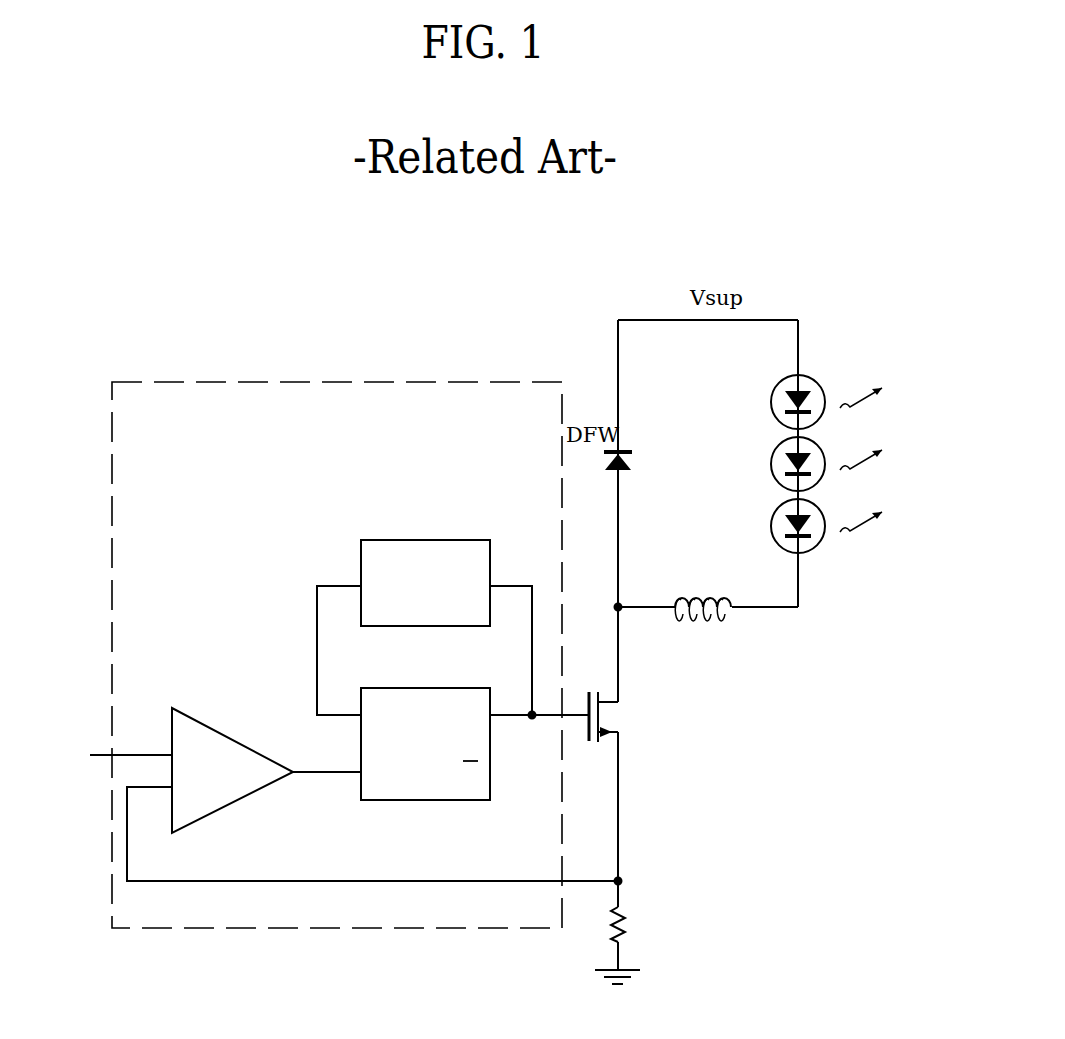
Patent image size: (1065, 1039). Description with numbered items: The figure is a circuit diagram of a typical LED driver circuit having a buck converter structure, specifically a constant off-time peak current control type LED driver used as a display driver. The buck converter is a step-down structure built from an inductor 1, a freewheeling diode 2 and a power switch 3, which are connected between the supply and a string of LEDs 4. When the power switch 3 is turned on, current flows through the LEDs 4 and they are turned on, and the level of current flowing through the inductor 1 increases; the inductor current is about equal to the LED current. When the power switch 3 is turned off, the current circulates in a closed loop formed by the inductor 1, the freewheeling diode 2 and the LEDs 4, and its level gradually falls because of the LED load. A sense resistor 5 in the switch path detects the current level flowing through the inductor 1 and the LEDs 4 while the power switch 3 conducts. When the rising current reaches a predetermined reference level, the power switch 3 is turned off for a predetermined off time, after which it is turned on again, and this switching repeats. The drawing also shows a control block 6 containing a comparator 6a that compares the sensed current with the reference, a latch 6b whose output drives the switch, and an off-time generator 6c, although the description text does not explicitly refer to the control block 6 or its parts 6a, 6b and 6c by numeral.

The inductor L 1 is at (732, 618).
The freewheeling diode DFW 2 is at (618, 320).
The power switch MSW 3 is at (623, 725).
The LEDs 4 is at (893, 385).
The resistor Rcs 5 is at (637, 915).
The control circuit 6 is at (110, 928).
The comparator 6a is at (213, 737).
The SR latch 6b is at (422, 792).
The Toff generator 6c is at (407, 548).